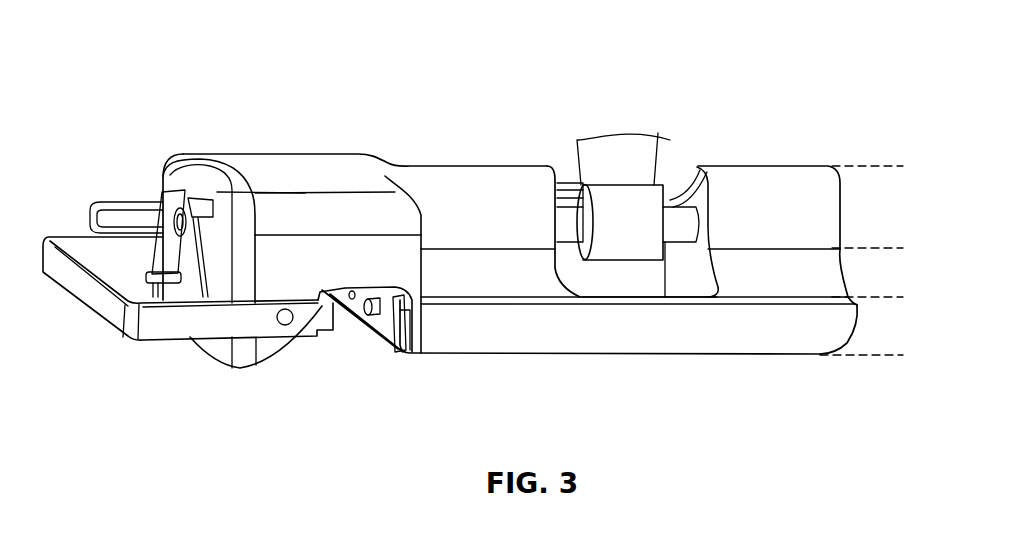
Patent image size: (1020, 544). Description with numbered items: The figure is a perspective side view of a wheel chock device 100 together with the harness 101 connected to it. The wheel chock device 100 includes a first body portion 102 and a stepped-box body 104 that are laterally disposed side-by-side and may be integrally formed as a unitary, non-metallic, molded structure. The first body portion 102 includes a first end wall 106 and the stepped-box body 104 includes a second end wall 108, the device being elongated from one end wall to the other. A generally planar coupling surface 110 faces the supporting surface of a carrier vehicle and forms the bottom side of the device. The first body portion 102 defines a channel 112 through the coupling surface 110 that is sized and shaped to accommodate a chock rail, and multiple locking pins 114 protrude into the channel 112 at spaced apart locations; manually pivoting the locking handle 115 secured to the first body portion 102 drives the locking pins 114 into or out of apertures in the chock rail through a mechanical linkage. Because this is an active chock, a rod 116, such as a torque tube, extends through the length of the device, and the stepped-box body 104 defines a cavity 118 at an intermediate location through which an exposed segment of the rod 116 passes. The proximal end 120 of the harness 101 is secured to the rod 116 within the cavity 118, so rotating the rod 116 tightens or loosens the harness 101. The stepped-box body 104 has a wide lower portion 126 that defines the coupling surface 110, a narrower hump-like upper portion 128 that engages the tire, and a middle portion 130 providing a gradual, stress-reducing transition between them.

The wheel chock device 100 is at (122, 80).
The harness 101 is at (592, 158).
The first body portion 102 is at (163, 112).
The stepped-box body 104 is at (860, 112).
The first end wall 106 is at (217, 277).
The second end wall 108 is at (841, 218).
The coupling surface 110 is at (465, 357).
The channel 112 is at (341, 290).
The locking pins 114 is at (355, 310).
The locking handle 115 is at (90, 293).
The rod 116 is at (572, 222).
The cavity 118 is at (700, 190).
The proximal end 120 is at (575, 252).
The lower portion 126 is at (903, 297).
The upper portion 128 is at (903, 166).
The middle portion 130 is at (903, 248).